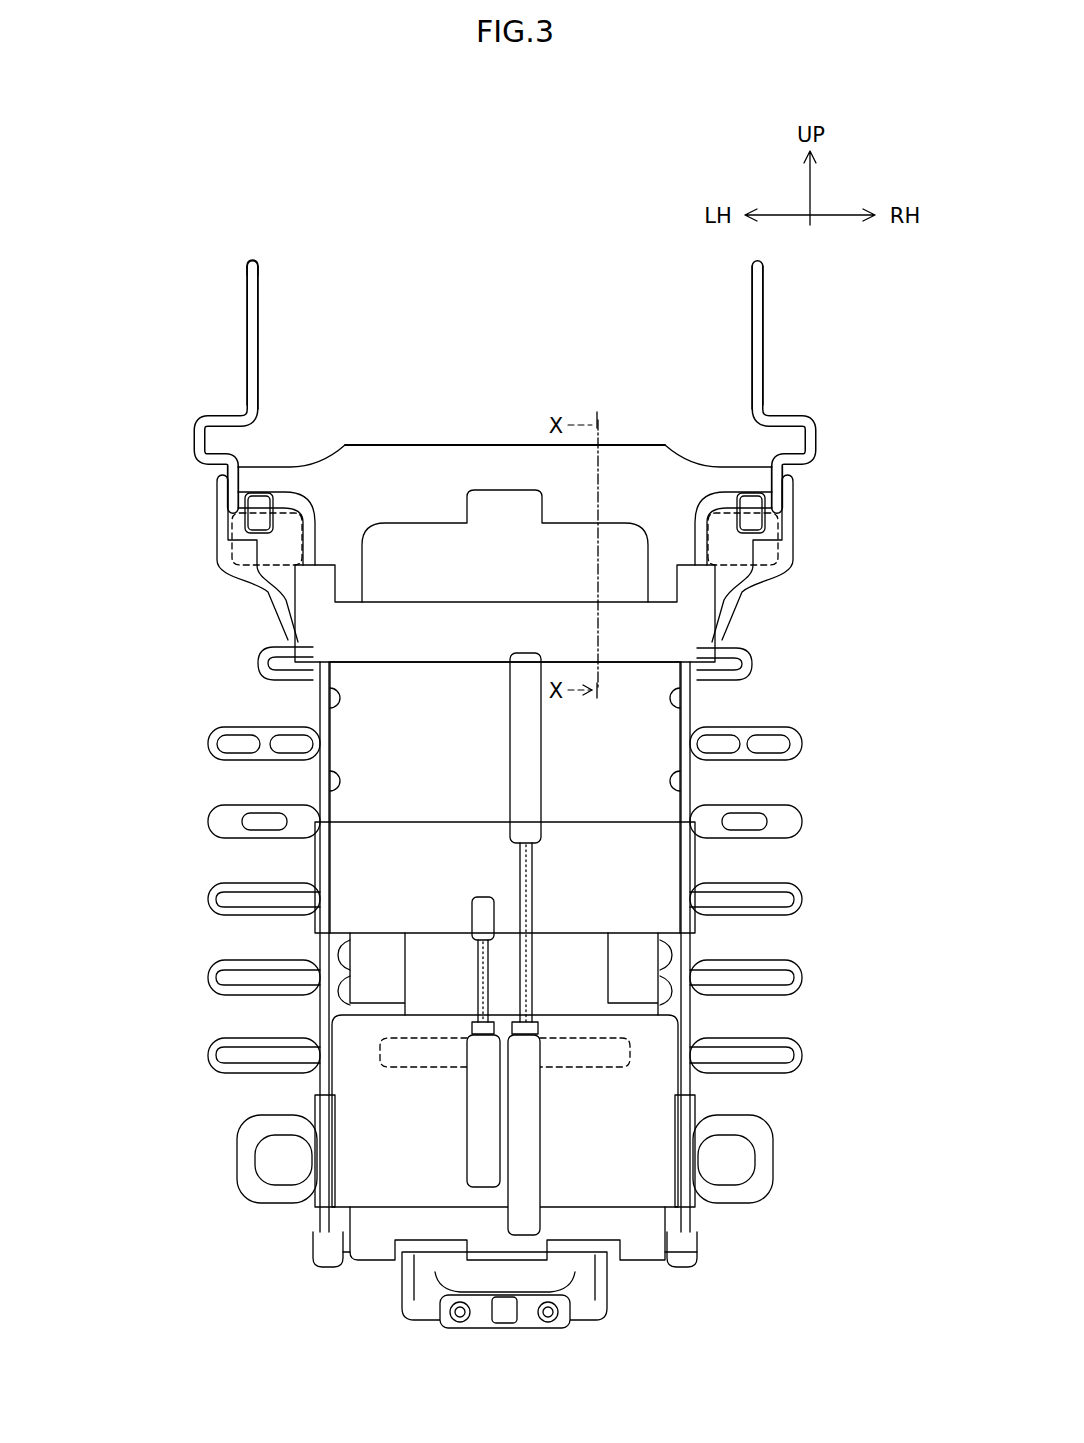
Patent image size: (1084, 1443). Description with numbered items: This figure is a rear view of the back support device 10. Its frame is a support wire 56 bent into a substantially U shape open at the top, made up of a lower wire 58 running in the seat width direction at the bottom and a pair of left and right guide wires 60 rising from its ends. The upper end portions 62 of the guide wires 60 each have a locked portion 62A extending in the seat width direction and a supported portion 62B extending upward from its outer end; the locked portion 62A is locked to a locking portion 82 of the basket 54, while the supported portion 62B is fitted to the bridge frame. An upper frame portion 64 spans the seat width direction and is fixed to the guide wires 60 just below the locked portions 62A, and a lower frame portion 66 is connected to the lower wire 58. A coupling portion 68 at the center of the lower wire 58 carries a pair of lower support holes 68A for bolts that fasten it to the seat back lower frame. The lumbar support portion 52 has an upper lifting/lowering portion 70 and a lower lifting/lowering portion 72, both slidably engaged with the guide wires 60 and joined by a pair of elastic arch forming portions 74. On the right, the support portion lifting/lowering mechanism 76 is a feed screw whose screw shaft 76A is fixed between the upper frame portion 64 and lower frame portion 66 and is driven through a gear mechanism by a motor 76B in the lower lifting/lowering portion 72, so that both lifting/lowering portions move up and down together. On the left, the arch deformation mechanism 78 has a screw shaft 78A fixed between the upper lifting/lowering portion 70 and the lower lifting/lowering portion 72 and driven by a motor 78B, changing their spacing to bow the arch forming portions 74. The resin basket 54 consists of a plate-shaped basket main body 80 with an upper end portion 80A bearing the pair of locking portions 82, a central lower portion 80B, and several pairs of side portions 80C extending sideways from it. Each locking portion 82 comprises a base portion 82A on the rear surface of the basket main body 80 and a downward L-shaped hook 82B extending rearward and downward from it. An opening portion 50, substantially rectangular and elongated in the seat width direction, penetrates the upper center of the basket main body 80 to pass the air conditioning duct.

The back support device 10 is at (557, 172).
The opening portion 50 is at (450, 540).
The lumbar support portion 52 is at (604, 815).
The basket 54 is at (412, 440).
The support wire 56 is at (262, 268).
The lower wire 58 is at (396, 1262).
The guide wires 60 is at (315, 1017).
The upper end portions 62 is at (188, 438).
The locked portion 62A is at (258, 500).
The supported portion 62B is at (243, 292).
The upper frame portion 64 is at (718, 622).
The lower frame portion 66 is at (668, 1245).
The coupling portion 68 is at (612, 1302).
The lower support holes 68A is at (490, 1332).
The upper lifting/lowering portion 70 is at (692, 860).
The lower lifting/lowering portion 72 is at (690, 1120).
The arch forming portions 74 is at (325, 940).
The support portion lifting/lowering mechanism 76 is at (548, 1170).
The screw shaft 76A is at (548, 1148).
The motor 76B is at (604, 1068).
The arch deformation mechanism 78 is at (478, 992).
The screw shaft 78A is at (458, 1158).
The motor 78B is at (425, 1065).
The basket main body 80 is at (474, 440).
The upper end portion 80A is at (280, 605).
The central lower portion 80B is at (360, 785).
The side portions 80C is at (258, 665).
The locking portions 82 is at (305, 495).
The base portion 82A is at (236, 522).
The hook 82B is at (262, 512).